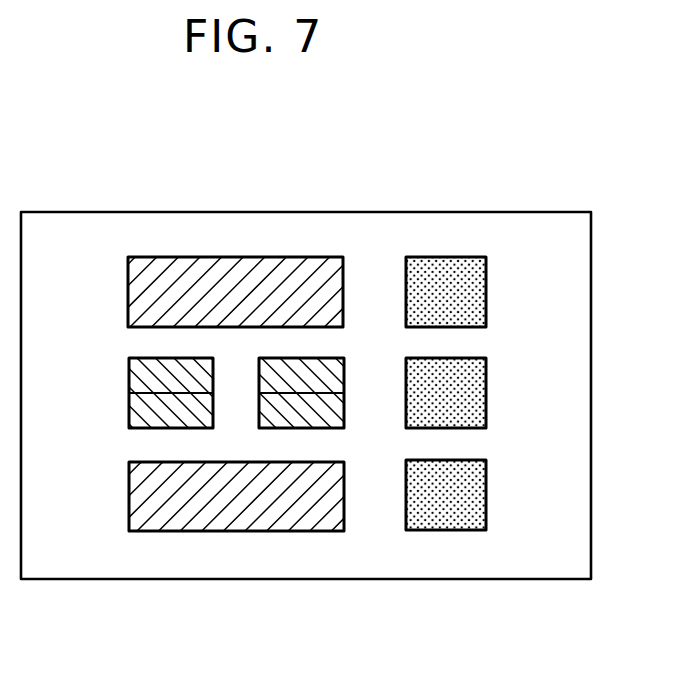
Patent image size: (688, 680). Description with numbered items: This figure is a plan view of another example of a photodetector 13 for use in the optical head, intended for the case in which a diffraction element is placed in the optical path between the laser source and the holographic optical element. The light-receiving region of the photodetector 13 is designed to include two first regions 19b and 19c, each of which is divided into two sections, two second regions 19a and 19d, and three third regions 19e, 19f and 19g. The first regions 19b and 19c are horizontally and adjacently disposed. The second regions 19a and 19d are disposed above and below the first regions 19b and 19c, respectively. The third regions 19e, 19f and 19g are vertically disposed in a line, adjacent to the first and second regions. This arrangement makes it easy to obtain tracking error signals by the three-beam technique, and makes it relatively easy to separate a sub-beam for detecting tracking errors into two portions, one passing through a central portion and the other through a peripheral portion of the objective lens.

The photodetector 13 is at (438, 223).
The second region 19a is at (233, 257).
The first region 19b is at (140, 372).
The first region 19c is at (340, 407).
The second region 19d is at (232, 523).
The third region 19e is at (478, 301).
The third region 19f is at (478, 397).
The third region 19g is at (477, 492).